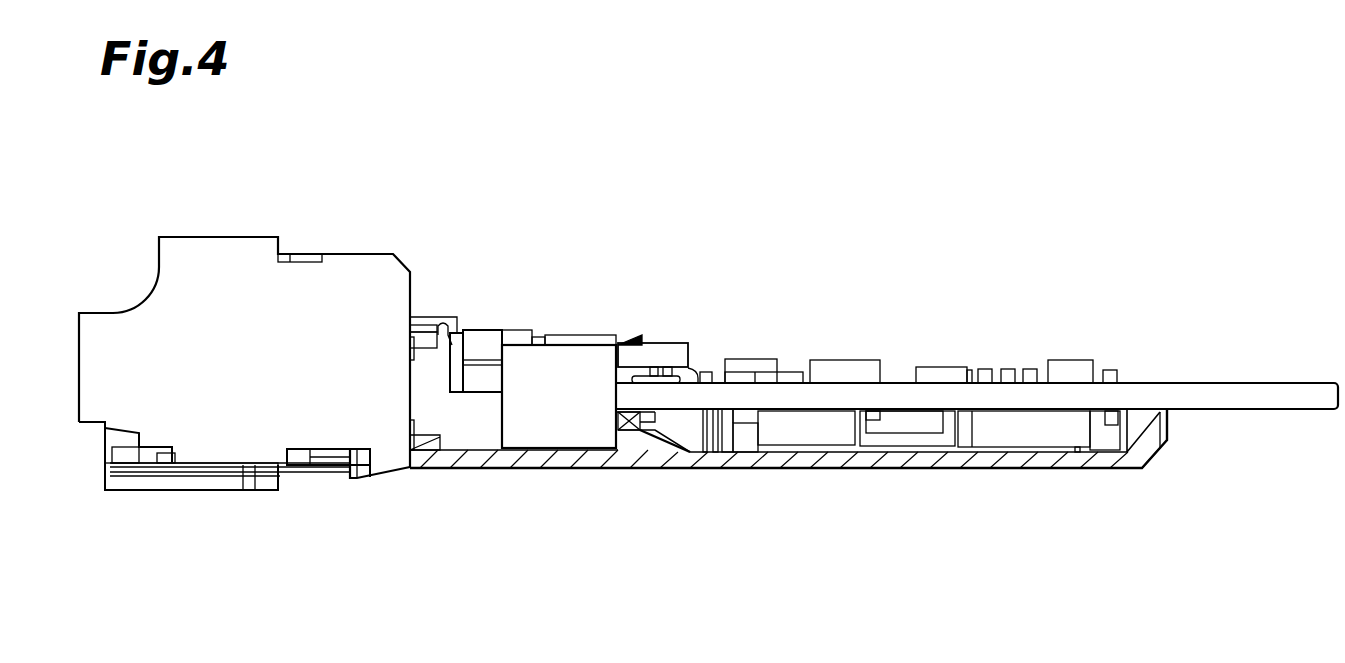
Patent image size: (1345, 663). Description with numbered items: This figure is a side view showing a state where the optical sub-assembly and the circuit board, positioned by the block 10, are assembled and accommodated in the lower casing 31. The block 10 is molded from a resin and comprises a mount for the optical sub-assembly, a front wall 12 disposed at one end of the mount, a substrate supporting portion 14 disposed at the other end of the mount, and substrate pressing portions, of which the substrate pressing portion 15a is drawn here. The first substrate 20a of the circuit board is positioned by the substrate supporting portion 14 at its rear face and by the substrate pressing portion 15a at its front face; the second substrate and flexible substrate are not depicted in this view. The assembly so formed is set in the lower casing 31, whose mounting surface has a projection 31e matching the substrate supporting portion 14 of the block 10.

The block 10 is at (525, 422).
The front wall 12 is at (443, 328).
The substrate supporting portion 14 is at (640, 430).
The substrate pressing portion 15a is at (691, 381).
The first substrate 20a is at (1211, 397).
The lower casing 31 is at (262, 412).
The projection 31e is at (624, 432).